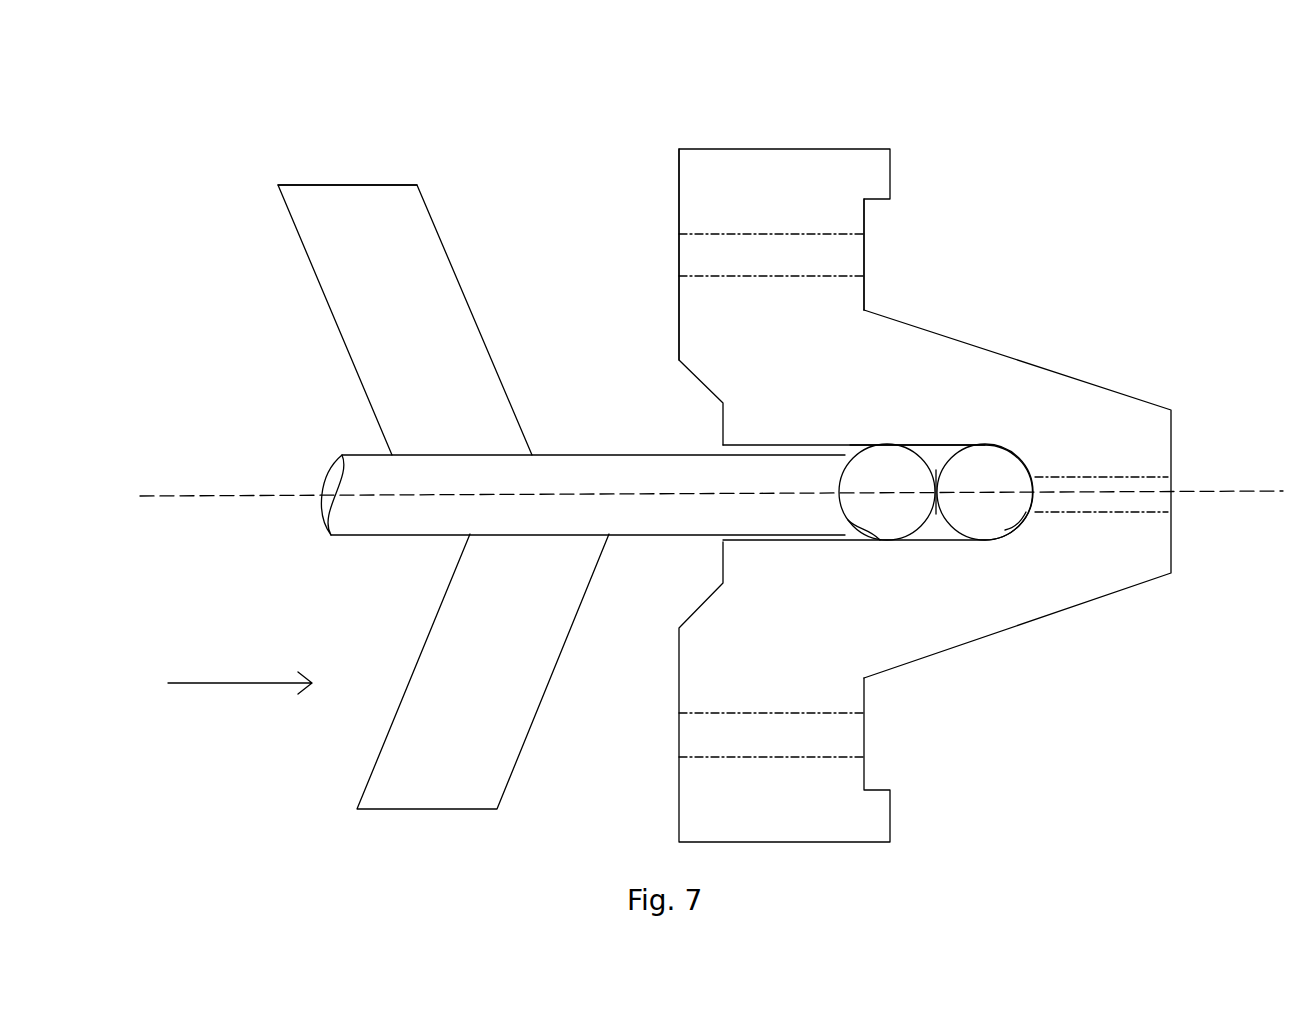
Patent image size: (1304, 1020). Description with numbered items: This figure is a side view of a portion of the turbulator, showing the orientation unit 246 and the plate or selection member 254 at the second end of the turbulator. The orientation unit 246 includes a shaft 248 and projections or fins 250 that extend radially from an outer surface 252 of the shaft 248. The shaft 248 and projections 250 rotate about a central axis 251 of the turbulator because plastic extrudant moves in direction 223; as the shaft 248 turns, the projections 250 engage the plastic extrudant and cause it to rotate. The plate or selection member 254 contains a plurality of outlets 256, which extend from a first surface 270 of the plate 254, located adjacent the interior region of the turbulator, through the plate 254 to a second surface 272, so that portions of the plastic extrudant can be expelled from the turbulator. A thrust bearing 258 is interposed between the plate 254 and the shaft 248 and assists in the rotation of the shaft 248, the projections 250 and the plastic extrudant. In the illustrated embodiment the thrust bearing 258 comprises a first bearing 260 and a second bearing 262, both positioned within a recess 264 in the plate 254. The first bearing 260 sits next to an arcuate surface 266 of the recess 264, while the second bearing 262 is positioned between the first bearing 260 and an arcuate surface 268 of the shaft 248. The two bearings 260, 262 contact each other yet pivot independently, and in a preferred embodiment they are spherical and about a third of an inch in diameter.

The direction 223 is at (233, 683).
The orientation unit 246 is at (419, 90).
The shaft 248 is at (381, 565).
The projections or fins 250 is at (398, 222).
The central axis 251 is at (205, 498).
The outer surface 252 is at (603, 453).
The plate or selection member 254 is at (1028, 380).
The outlets 256 is at (930, 216).
The thrust bearing 258 is at (1067, 440).
The first bearing 260 is at (993, 470).
The second bearing 262 is at (892, 462).
The recess 264 is at (945, 538).
The arcuate surface 266 is at (997, 545).
The arcuate surface 268 is at (890, 532).
The first surface 270 is at (679, 186).
The second surface 272 is at (866, 292).